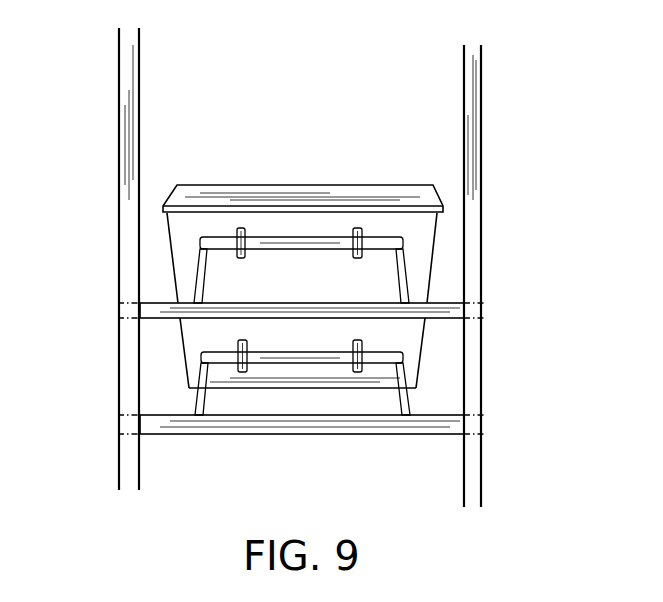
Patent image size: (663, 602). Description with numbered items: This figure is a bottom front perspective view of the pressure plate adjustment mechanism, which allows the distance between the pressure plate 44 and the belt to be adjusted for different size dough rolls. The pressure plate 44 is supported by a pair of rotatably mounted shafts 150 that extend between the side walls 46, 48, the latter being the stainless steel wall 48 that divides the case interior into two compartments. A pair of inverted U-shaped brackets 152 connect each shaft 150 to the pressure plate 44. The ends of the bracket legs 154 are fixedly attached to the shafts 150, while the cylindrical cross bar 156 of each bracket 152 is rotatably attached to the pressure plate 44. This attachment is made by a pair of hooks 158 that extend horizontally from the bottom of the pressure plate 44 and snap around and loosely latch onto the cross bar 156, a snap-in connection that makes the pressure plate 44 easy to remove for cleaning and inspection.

The pressure plate 44 is at (311, 185).
The side wall 46 is at (483, 143).
The stainless steel wall 48 is at (118, 146).
The rotatably mounted shaft 150 is at (443, 318).
The inverted U-shaped bracket 152 is at (365, 342).
The bracket leg 154 is at (203, 277).
The cylindrical cross bar 156 is at (323, 238).
The hook 158 is at (237, 229).